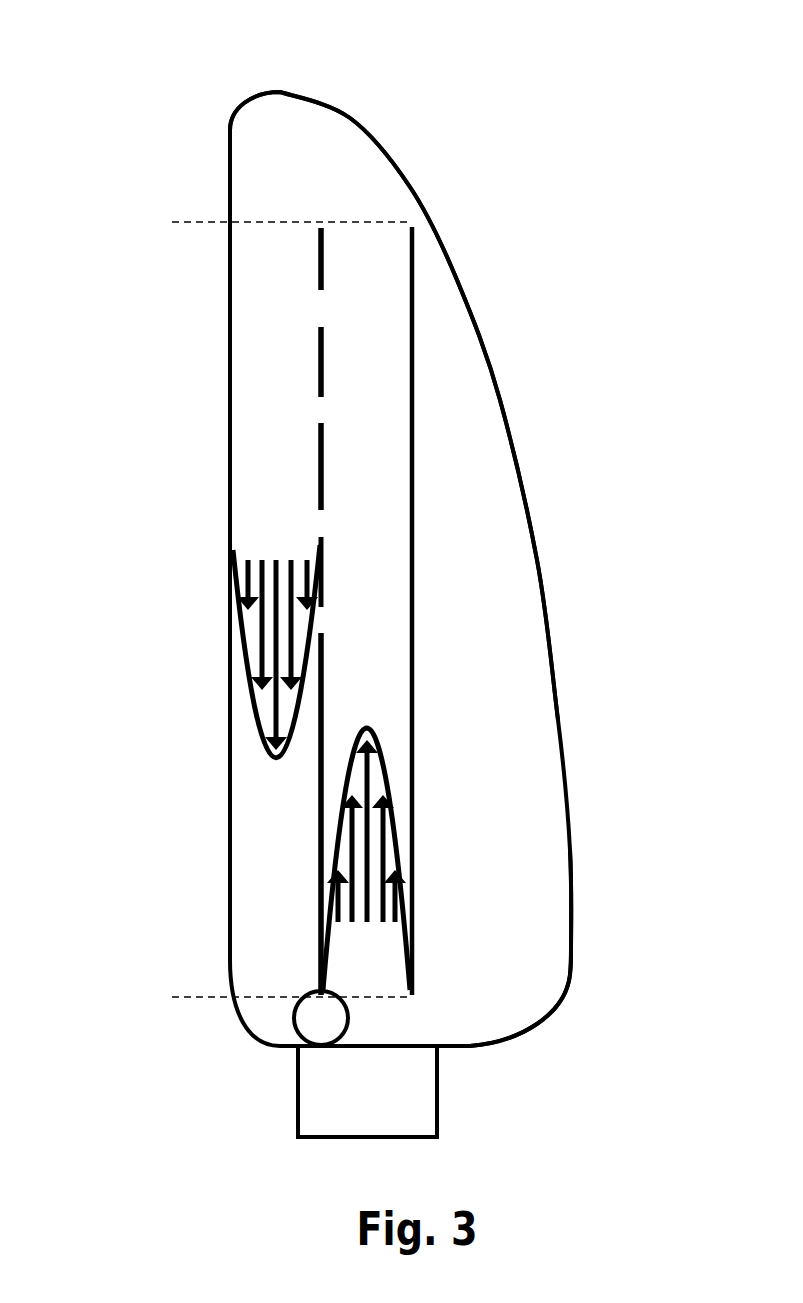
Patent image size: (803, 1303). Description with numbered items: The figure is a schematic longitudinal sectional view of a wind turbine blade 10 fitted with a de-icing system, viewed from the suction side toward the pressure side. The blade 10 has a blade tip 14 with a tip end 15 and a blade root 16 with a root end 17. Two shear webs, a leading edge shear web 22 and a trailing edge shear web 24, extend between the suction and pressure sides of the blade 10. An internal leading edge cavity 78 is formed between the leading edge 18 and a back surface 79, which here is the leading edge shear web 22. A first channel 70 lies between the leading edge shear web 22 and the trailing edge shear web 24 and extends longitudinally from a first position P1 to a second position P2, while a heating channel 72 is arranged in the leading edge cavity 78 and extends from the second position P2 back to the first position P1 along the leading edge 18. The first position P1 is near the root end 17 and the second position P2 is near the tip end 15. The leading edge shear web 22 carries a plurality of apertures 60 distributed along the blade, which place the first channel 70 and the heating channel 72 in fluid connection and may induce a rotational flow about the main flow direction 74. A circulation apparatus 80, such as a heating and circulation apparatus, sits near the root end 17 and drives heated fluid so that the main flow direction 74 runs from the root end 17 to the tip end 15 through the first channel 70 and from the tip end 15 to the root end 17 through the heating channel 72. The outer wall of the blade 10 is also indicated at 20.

The wind turbine blade 10 is at (592, 196).
The blade tip 14 is at (375, 112).
The tip end 15 is at (268, 90).
The blade root 16 is at (552, 1040).
The root end 17 is at (420, 1137).
The leading edge 18 is at (230, 508).
The outer wall 20 is at (530, 500).
The leading edge shear web 22 is at (325, 240).
The trailing edge shear web 24 is at (415, 278).
The apertures 60 is at (313, 407).
The first channel 70 is at (372, 665).
The heating channel 72 is at (302, 495).
The main flow direction 74 is at (340, 947).
The leading edge cavity 78 is at (250, 457).
The back surface 79 is at (318, 264).
The circulation apparatus 80 is at (308, 1012).
The first position P1 is at (275, 998).
The second position P2 is at (275, 221).